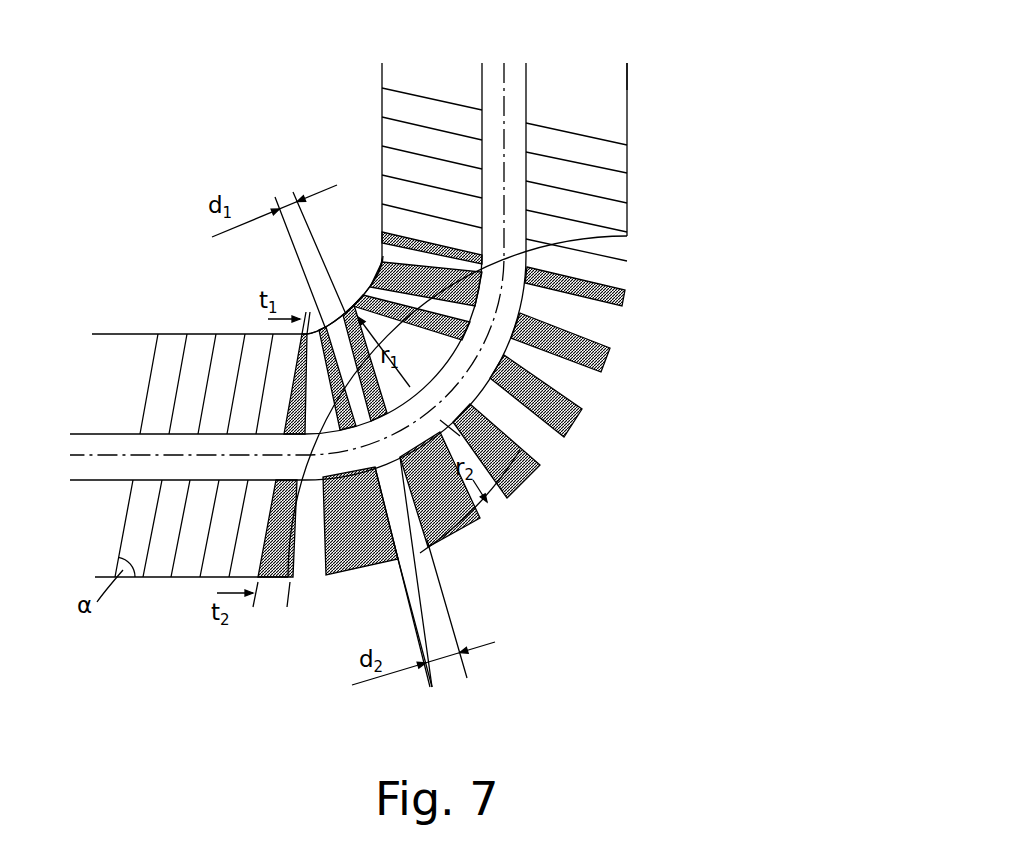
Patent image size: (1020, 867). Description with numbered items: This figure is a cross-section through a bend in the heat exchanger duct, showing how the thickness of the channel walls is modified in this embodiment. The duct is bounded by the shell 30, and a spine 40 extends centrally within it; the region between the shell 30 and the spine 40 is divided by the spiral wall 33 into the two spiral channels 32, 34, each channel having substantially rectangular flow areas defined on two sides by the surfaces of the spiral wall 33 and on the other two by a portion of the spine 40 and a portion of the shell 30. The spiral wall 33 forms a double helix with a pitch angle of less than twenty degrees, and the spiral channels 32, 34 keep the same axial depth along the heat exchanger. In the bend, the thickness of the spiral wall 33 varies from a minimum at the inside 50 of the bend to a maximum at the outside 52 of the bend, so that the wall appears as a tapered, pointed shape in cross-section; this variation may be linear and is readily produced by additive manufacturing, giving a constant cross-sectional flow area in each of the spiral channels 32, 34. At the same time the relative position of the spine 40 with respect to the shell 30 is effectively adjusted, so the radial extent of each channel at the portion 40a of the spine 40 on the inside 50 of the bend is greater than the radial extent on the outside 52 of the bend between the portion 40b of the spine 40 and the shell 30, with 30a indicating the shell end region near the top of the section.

The shell 30 is at (629, 110).
The end portion of component 30a is at (627, 80).
The spiral channel 32 is at (407, 543).
The spiral wall 33 is at (452, 522).
The spiral channel 34 is at (492, 493).
The spine 40 is at (526, 77).
The portion of the spine 40a is at (418, 386).
The portion of the spine 40b is at (440, 423).
The inside of the bend 50 is at (352, 302).
The outside of the bend 52 is at (487, 513).